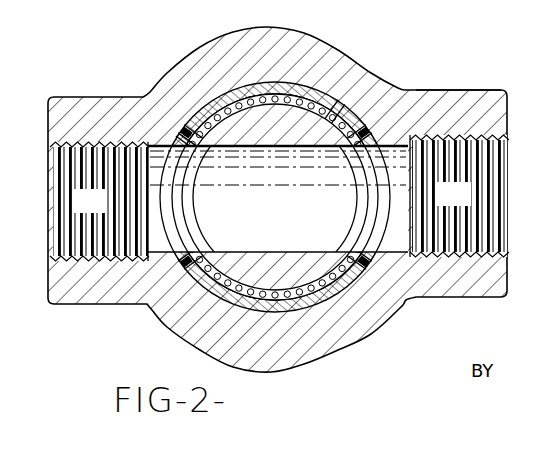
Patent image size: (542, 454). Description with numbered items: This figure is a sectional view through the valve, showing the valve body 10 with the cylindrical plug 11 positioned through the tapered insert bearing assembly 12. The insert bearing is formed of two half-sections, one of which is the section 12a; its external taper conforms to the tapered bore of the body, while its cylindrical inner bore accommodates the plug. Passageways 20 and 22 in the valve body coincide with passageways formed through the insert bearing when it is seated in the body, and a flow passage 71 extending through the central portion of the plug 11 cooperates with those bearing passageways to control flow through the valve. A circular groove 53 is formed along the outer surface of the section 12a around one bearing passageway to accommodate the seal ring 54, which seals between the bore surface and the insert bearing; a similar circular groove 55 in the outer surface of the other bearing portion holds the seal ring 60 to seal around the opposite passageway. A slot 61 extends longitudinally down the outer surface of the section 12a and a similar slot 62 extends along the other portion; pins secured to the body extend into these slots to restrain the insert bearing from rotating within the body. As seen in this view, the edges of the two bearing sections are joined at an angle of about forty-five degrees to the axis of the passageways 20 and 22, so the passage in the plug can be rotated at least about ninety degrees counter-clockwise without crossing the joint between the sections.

The valve body 10 is at (80, 102).
The cylindrical plug 11 is at (288, 141).
The tapered insert bearing assembly 12 is at (331, 294).
The insert bearing half-section 12a is at (252, 96).
The passageway 20 is at (101, 210).
The passageway 22 is at (464, 203).
The circular groove 53 is at (197, 135).
The seal ring 54 is at (183, 128).
The circular groove 55 is at (431, 100).
The seal ring 60 is at (371, 137).
The slot 61 is at (212, 289).
The slot 62 is at (337, 98).
The flow passage 71 is at (238, 253).